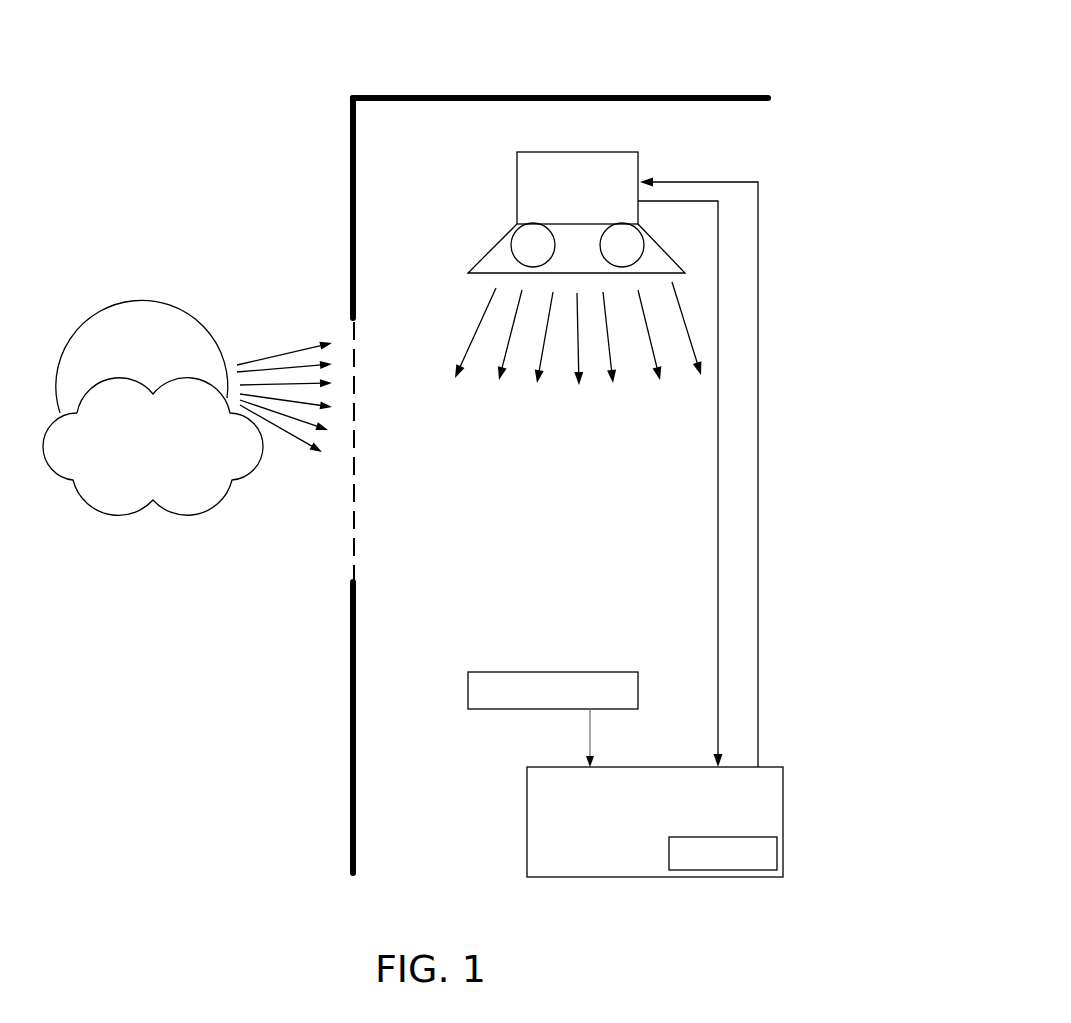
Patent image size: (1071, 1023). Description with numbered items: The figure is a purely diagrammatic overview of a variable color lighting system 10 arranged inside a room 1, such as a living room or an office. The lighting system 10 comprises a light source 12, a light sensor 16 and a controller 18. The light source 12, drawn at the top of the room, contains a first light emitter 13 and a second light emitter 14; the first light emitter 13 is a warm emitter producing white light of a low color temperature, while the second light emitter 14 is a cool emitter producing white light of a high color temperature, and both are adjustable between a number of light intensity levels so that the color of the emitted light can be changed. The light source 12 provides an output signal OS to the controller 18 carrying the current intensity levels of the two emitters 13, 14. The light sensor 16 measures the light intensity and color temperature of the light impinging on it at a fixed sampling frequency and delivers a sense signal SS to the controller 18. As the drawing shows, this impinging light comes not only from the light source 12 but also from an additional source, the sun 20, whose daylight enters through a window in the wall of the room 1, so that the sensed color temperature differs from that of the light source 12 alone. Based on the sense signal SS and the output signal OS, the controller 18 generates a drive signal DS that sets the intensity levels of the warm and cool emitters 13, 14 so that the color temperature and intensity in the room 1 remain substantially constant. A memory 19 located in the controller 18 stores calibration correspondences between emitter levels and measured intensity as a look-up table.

The room 1 is at (645, 55).
The lighting system 10 is at (592, 135).
The light source 12 is at (535, 172).
The first light emitter 13 is at (527, 243).
The second light emitter 14 is at (626, 241).
The light sensor 16 is at (495, 682).
The controller 18 is at (538, 813).
The memory 19 is at (684, 863).
The sun 20 is at (143, 315).
The output signal OS is at (718, 448).
The drive signal DS is at (760, 565).
The sense signal SS is at (590, 735).